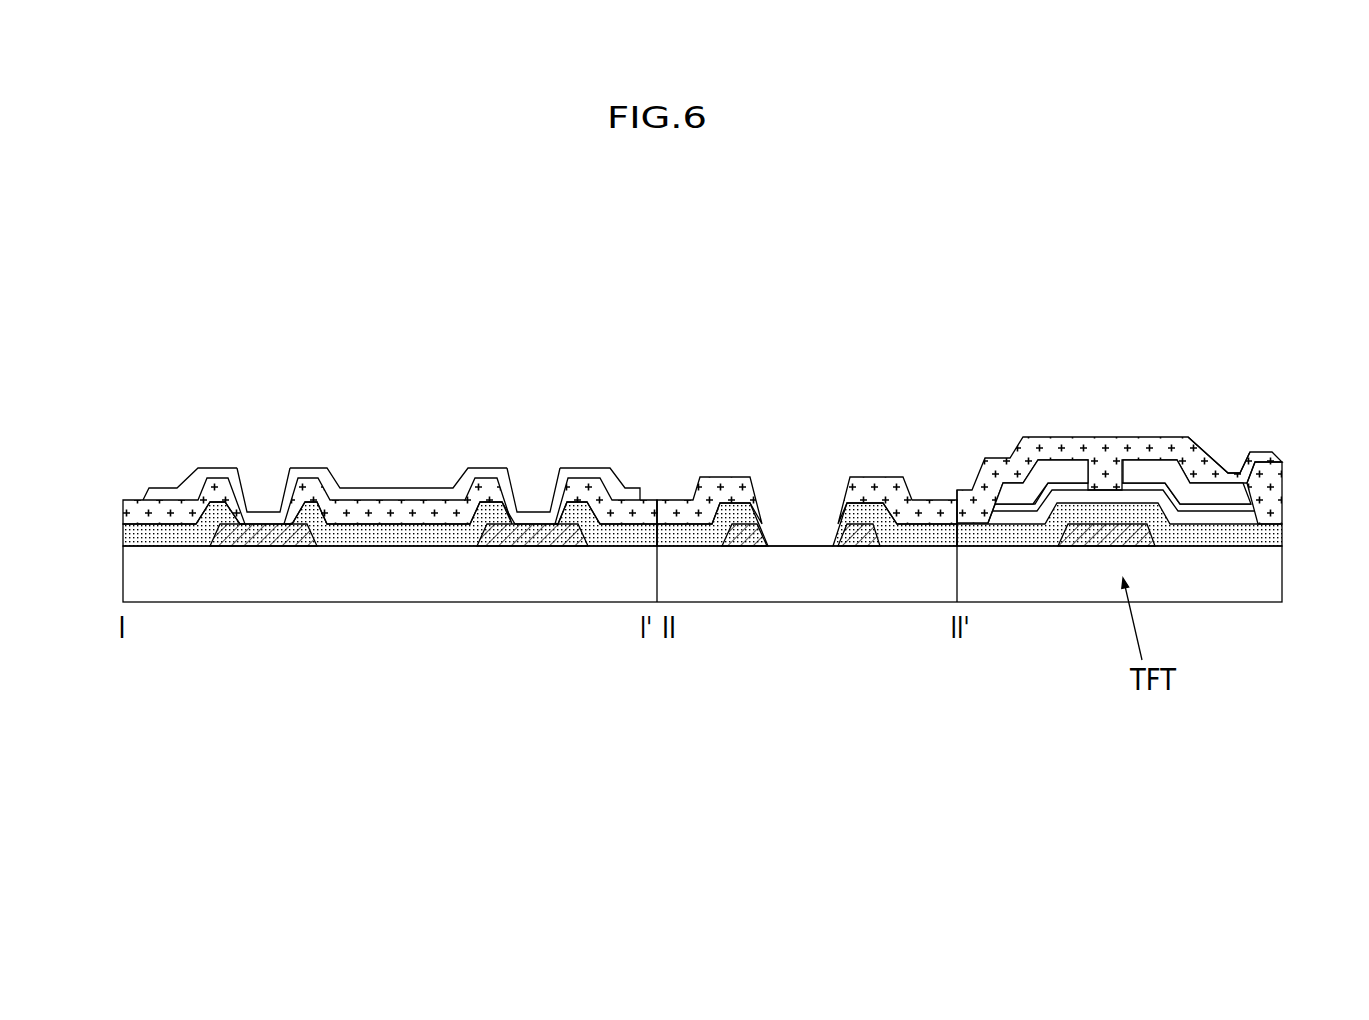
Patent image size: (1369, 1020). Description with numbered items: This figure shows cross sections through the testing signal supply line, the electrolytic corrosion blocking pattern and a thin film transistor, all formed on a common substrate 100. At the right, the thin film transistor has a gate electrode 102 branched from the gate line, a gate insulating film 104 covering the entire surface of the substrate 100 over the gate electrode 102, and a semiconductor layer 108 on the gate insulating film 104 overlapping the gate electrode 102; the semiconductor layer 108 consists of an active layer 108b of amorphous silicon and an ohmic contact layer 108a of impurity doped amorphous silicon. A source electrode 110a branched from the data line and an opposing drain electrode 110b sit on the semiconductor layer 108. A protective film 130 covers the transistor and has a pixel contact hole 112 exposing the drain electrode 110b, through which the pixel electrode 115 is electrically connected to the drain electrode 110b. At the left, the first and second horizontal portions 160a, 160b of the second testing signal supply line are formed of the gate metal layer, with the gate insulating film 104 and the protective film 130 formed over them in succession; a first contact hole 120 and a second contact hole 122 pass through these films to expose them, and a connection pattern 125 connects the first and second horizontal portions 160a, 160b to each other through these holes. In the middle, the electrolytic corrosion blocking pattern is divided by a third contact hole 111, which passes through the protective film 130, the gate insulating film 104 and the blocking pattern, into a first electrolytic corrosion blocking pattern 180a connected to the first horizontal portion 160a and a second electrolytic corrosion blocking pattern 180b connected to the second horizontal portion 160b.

The substrate 100 is at (1285, 575).
The gate electrode 102 is at (1093, 548).
The gate insulating film 104 is at (123, 540).
The semiconductor layer 108 is at (1157, 639).
The ohmic contact layer 108a is at (1197, 505).
The active layer 108b is at (1225, 513).
The source electrode 110a is at (1068, 470).
The drain electrode 110b is at (1151, 470).
The third contact hole 111 is at (804, 474).
The pixel contact hole 112 is at (1235, 431).
The pixel electrode 115 is at (1256, 452).
The first contact hole 120 is at (262, 472).
The second contact hole 122 is at (533, 474).
The connection pattern 125 is at (586, 472).
The protective film 130 is at (123, 512).
The first horizontal portion 160a is at (263, 548).
The second horizontal portion 160b is at (530, 548).
The first electrolytic corrosion blocking pattern 180a is at (739, 548).
The second electrolytic corrosion blocking pattern 180b is at (851, 548).